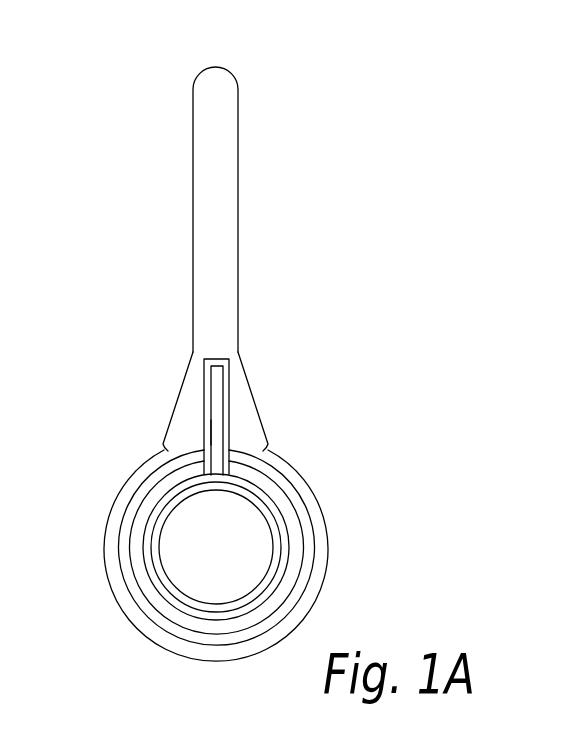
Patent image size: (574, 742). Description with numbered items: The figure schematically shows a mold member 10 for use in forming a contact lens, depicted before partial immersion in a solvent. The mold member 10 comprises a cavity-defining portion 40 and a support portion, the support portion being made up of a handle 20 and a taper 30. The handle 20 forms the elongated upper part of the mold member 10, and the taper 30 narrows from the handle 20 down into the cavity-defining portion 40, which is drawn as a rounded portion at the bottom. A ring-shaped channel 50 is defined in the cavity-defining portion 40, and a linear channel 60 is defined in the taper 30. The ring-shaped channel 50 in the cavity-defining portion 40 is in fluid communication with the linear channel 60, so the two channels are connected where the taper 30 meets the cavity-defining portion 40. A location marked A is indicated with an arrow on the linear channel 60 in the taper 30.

The mold member 10 is at (180, 364).
The handle 20 is at (213, 280).
The taper 30 is at (235, 422).
The cavity-defining portion 40 is at (140, 628).
The ring-shaped channel 50 is at (143, 548).
The linear channel 60 is at (207, 393).
The location A / slot opening A is at (196, 431).